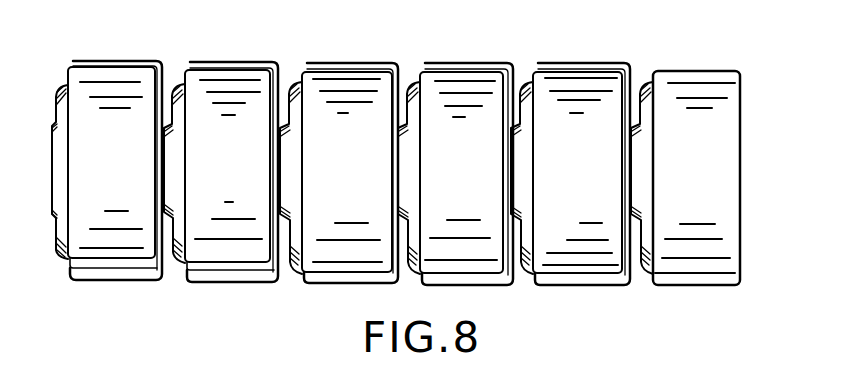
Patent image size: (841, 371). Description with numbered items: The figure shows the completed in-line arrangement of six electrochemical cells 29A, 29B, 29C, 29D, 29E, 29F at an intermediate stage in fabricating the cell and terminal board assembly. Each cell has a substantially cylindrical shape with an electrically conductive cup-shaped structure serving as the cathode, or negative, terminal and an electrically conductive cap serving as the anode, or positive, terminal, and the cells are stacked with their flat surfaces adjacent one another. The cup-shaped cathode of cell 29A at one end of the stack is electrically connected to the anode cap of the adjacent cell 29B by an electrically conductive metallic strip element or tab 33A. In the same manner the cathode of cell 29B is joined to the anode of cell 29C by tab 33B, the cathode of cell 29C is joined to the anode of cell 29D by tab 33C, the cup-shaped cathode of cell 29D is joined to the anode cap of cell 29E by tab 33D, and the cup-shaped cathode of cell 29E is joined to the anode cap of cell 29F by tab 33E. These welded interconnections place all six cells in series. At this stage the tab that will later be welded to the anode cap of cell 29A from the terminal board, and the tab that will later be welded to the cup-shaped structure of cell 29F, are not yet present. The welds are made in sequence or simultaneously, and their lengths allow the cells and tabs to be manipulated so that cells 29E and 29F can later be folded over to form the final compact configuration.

The cell 29A is at (135, 165).
The cell 29B is at (252, 165).
The cell 29C is at (363, 167).
The cell 29D is at (480, 167).
The cell 29E is at (602, 167).
The cell 29F is at (717, 167).
The conductive strip element or tab 33A is at (122, 60).
The conductive strip element or tab 33B is at (232, 60).
The conductive strip element or tab 33C is at (338, 60).
The conductive strip element or tab 33D is at (458, 60).
The conductive strip element or tab 33E is at (577, 62).